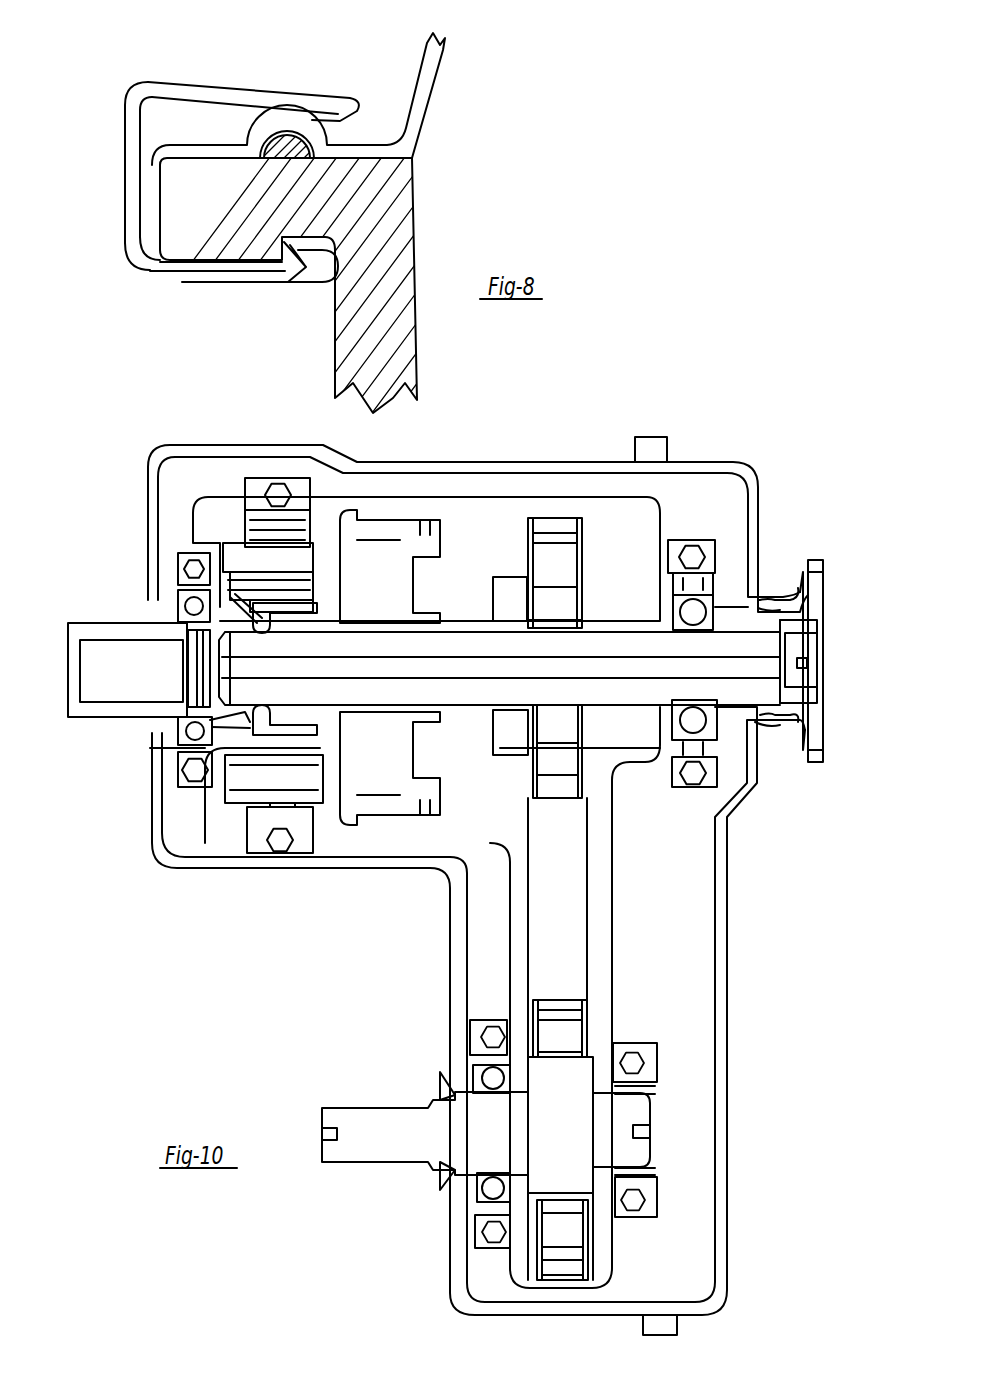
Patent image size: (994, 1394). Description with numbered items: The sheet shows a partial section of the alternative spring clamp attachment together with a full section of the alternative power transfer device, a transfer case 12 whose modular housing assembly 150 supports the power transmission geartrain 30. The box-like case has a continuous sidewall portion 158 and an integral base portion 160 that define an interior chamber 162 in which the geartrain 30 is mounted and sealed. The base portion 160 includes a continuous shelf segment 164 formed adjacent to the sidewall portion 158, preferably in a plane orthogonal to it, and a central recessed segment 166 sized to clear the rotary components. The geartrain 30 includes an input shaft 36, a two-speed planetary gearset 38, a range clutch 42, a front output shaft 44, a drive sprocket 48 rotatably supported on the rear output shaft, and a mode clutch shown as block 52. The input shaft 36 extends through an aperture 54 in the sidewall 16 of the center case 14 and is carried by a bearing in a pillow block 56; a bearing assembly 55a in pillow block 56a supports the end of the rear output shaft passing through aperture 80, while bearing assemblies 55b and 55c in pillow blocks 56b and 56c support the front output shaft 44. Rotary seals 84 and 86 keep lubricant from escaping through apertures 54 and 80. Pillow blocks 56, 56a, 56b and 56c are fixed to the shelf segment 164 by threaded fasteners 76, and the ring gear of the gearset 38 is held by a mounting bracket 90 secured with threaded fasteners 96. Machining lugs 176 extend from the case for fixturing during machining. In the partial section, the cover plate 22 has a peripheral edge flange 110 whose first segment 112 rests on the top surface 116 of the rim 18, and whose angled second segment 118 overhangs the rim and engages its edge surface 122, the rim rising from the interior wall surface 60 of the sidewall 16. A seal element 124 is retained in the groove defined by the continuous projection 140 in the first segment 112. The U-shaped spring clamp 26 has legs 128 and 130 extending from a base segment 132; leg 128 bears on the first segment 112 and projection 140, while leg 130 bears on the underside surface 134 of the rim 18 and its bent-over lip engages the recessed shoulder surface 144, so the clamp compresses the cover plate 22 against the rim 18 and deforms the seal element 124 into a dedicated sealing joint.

In FIG. 10, the transfer case 12 is at (486, 814).
In FIG. 8, the center case 14 is at (416, 218).
In FIG. 8, the sidewall 16 is at (387, 250).
In FIG. 8, the upper rim 18 is at (178, 210).
In FIG. 8, the upper cover plate 22 is at (433, 120).
In FIG. 8, the spring clamp 26 is at (272, 186).
In FIG. 10, the power transmission geartrain 30 is at (452, 547).
In FIG. 10, the input shaft 36 is at (85, 635).
In FIG. 10, the two-speed planetary gearset 38 is at (228, 524).
In FIG. 10, the range clutch 42 is at (432, 742).
In FIG. 10, the front output shaft 44 is at (388, 1128).
In FIG. 10, the drive sprocket 48 is at (567, 728).
In FIG. 10, the mode clutch 52 is at (508, 583).
In FIG. 10, the aperture 54 is at (160, 722).
In FIG. 10, the bearing assembly 55a is at (700, 697).
In FIG. 10, the bearing assembly 55b is at (640, 1170).
In FIG. 10, the bearing assembly 55c is at (492, 1190).
In FIG. 10, the pillow block 56 is at (178, 777).
In FIG. 10, the pillow block 56a is at (712, 552).
In FIG. 10, the pillow block 56b is at (647, 1087).
In FIG. 10, the pillow block 56c is at (480, 1245).
In FIG. 8, the interior wall surface 60 is at (407, 168).
In FIG. 10, the threaded fasteners 76 is at (693, 787).
In FIG. 10, the aperture 80 is at (779, 590).
In FIG. 10, the rotary seal 84 is at (177, 617).
In FIG. 10, the rotary seal 86 is at (777, 737).
In FIG. 10, the mounting bracket 90 is at (300, 485).
In FIG. 10, the threaded fasteners 96 is at (280, 843).
In FIG. 8, the peripheral edge flange 110 is at (200, 138).
In FIG. 8, the first segment 112 is at (360, 147).
In FIG. 8, the top surface 116 is at (423, 97).
In FIG. 8, the second segment 118 is at (147, 182).
In FIG. 8, the edge surface 122 is at (143, 220).
In FIG. 8, the seal element 124 is at (273, 117).
In FIG. 8, the leg 128 is at (168, 87).
In FIG. 8, the leg 130 is at (187, 267).
In FIG. 8, the base segment 132 is at (127, 118).
In FIG. 8, the underside surface 134 is at (243, 263).
In FIG. 8, the continuous projection 140 is at (268, 120).
In FIG. 8, the recessed shoulder surface 144 is at (298, 252).
In FIG. 10, the modular housing assembly 150 is at (699, 397).
In FIG. 10, the continuous sidewall portion 158 is at (525, 466).
In FIG. 10, the integral base portion 160 is at (645, 752).
In FIG. 10, the interior chamber 162 is at (628, 600).
In FIG. 10, the continuous shelf segment 164 is at (663, 942).
In FIG. 10, the central recessed segment 166 is at (605, 985).
In FIG. 10, the machining lugs 176 is at (647, 440).